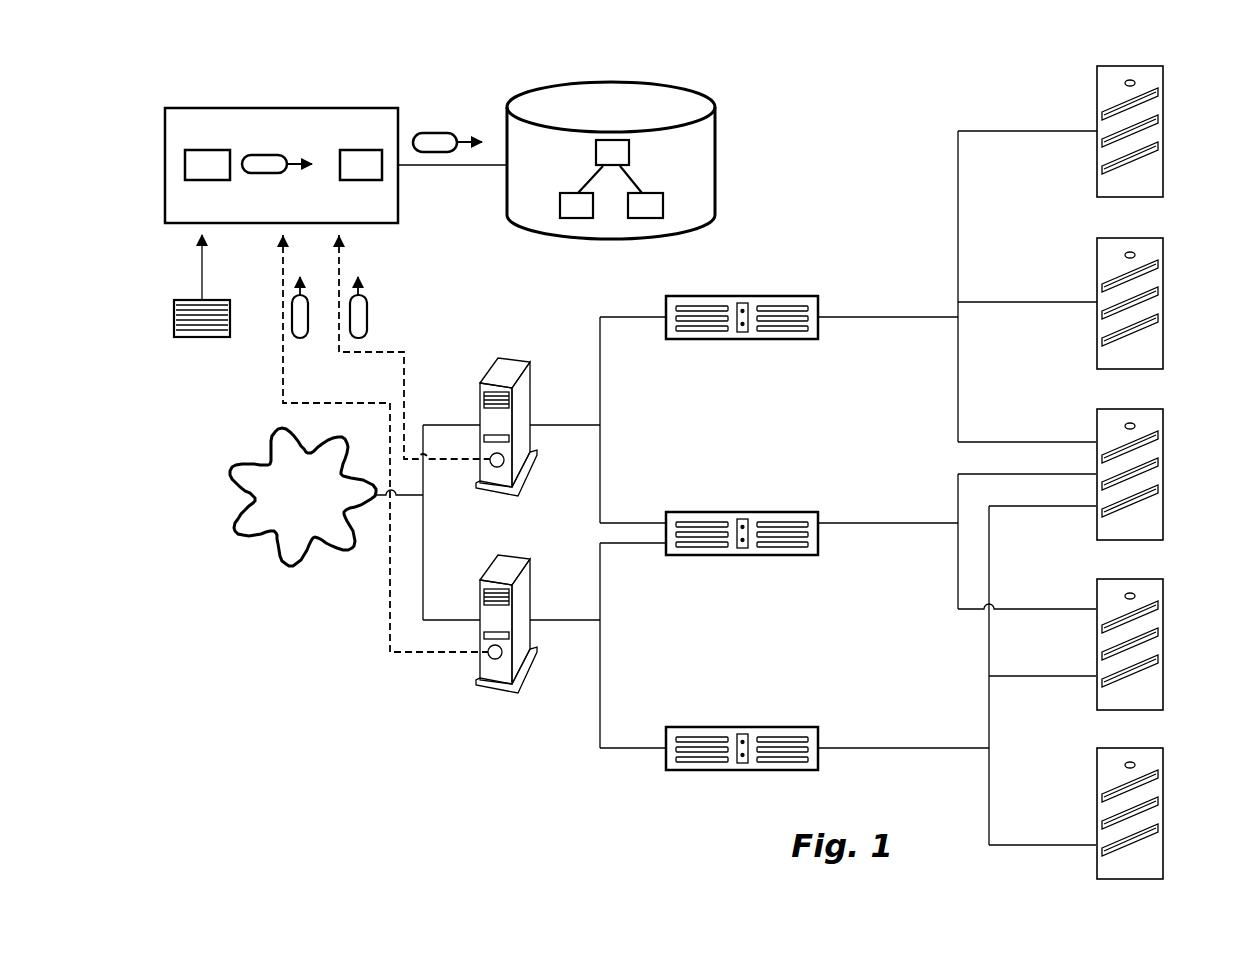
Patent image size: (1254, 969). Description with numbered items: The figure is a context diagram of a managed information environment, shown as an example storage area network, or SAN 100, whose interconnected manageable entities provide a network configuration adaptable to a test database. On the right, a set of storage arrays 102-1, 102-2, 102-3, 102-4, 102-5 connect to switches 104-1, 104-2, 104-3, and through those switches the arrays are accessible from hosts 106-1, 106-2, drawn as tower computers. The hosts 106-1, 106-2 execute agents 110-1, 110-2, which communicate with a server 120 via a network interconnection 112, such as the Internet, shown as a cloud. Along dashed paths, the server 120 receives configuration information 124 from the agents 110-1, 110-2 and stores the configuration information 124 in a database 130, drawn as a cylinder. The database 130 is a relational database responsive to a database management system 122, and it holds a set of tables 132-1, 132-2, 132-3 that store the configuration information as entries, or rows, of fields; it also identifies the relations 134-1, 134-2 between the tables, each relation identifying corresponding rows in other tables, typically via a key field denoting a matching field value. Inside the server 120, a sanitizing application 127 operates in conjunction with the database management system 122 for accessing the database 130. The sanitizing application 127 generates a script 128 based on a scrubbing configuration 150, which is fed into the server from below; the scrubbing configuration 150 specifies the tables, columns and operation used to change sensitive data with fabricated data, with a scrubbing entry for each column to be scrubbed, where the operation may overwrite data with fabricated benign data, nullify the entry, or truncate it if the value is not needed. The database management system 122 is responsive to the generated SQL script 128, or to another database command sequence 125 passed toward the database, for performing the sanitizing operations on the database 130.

The SAN 100 is at (338, 770).
The storage array 102-1 is at (1163, 131).
The storage array 102-2 is at (1163, 302).
The storage array 102-3 is at (1163, 463).
The storage array 102-4 is at (1163, 640).
The storage array 102-5 is at (1163, 810).
The switch 104-1 is at (742, 296).
The switch 104-2 is at (742, 512).
The switch 104-3 is at (742, 727).
The host 106-1 is at (505, 358).
The host 106-2 is at (505, 693).
The agent 110-1 is at (491, 466).
The agent 110-2 is at (492, 660).
The network interconnection 112 is at (241, 551).
The server 120 is at (222, 108).
The database management system 122 is at (374, 150).
The configuration information 124 is at (367, 318).
The database command sequence 125 is at (440, 133).
The sanitizing application 127 is at (232, 152).
The script 128 is at (284, 156).
The database 130 is at (660, 85).
The table 132-1 is at (565, 193).
The table 132-2 is at (629, 152).
The table 132-3 is at (664, 208).
The relation 134-1 is at (598, 175).
The relation 134-2 is at (633, 174).
The scrubbing configuration 150 is at (190, 338).